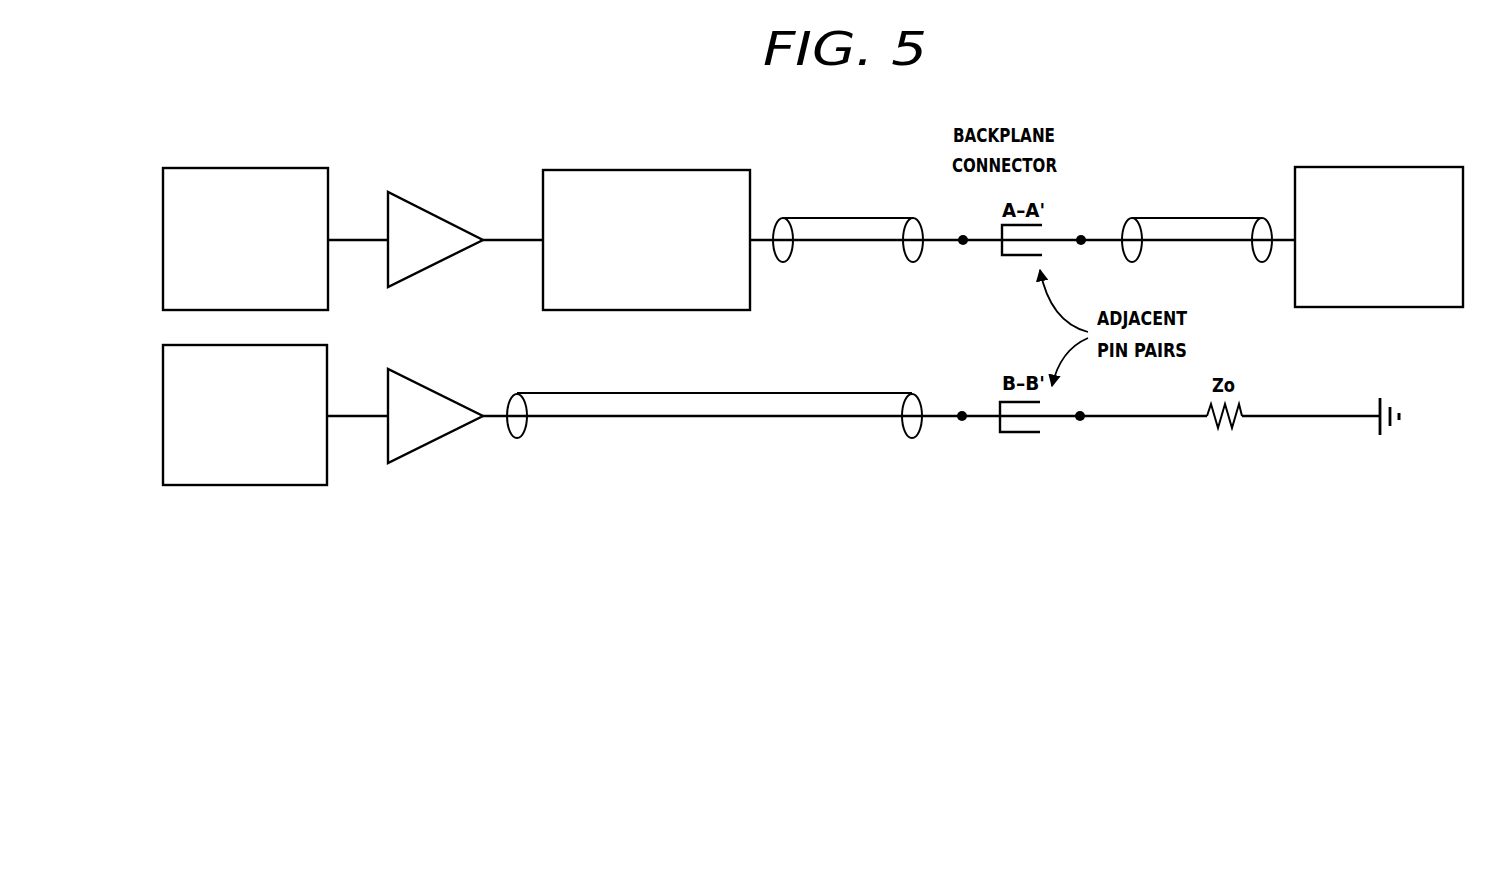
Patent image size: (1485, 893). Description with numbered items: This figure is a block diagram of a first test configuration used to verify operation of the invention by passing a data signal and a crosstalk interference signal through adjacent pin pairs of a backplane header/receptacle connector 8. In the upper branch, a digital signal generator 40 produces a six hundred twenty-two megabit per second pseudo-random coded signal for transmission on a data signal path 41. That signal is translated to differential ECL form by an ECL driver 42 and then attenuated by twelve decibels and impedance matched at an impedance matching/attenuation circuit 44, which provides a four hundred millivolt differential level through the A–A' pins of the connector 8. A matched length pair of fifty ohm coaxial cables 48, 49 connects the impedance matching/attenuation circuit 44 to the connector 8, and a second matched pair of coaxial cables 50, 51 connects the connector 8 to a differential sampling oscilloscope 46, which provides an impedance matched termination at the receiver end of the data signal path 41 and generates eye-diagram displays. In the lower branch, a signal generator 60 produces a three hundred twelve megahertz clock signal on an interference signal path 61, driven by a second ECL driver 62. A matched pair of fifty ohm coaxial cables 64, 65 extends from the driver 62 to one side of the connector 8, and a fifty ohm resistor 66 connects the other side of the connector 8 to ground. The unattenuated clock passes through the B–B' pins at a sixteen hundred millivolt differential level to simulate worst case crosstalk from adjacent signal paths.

The header/receptacle connector 8 is at (1003, 268).
The digital signal generator 40 is at (222, 168).
The data signal path 41 is at (600, 143).
The ECL driver 42 is at (437, 265).
The impedance matching/attenuation circuit 44 is at (700, 170).
The differential sampling oscilloscope 46 is at (1355, 167).
The coaxial cable 48 is at (818, 218).
The coaxial cable 49 is at (818, 218).
The coaxial cable 50 is at (1170, 218).
The coaxial cable 51 is at (1170, 218).
The signal generator 60 is at (217, 485).
The interference signal path 61 is at (677, 430).
The ECL driver 62 is at (435, 442).
The coaxial cable 64 is at (735, 393).
The coaxial cable 65 is at (735, 393).
The resistor 66 is at (1232, 425).